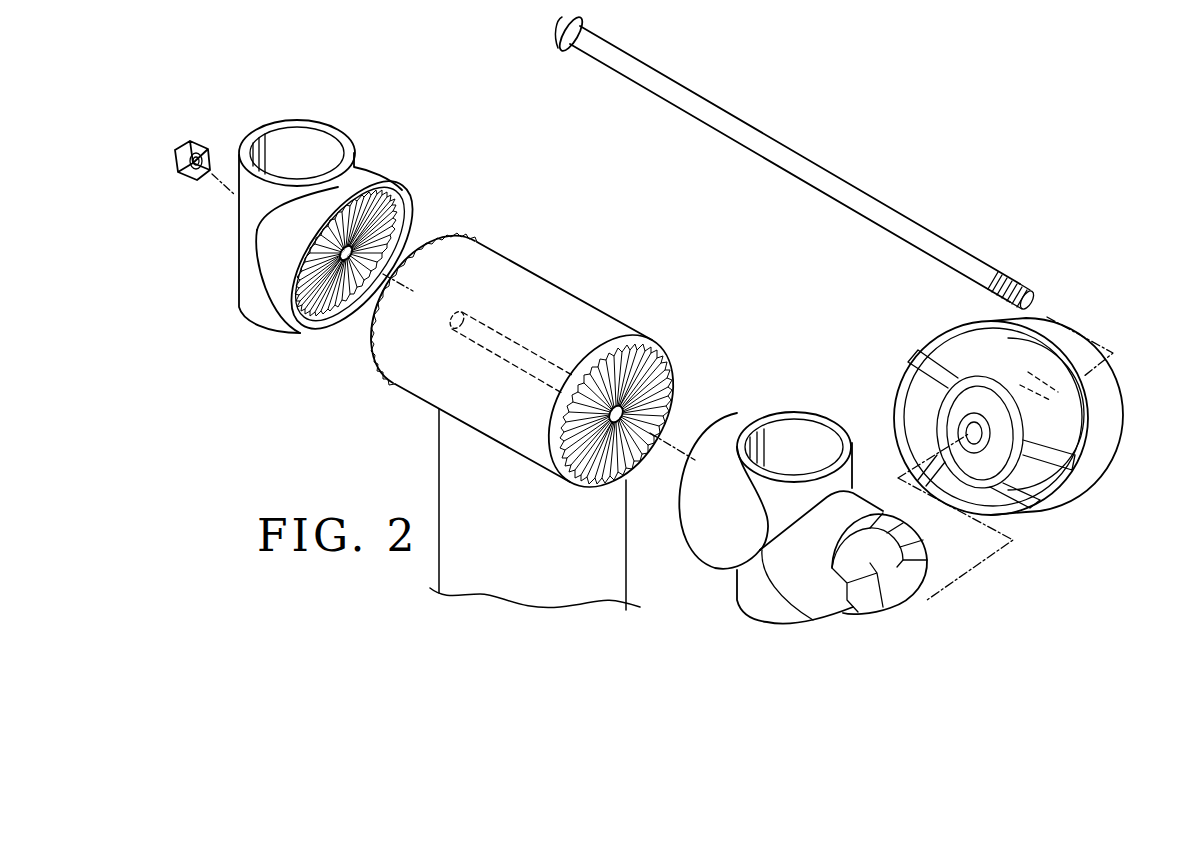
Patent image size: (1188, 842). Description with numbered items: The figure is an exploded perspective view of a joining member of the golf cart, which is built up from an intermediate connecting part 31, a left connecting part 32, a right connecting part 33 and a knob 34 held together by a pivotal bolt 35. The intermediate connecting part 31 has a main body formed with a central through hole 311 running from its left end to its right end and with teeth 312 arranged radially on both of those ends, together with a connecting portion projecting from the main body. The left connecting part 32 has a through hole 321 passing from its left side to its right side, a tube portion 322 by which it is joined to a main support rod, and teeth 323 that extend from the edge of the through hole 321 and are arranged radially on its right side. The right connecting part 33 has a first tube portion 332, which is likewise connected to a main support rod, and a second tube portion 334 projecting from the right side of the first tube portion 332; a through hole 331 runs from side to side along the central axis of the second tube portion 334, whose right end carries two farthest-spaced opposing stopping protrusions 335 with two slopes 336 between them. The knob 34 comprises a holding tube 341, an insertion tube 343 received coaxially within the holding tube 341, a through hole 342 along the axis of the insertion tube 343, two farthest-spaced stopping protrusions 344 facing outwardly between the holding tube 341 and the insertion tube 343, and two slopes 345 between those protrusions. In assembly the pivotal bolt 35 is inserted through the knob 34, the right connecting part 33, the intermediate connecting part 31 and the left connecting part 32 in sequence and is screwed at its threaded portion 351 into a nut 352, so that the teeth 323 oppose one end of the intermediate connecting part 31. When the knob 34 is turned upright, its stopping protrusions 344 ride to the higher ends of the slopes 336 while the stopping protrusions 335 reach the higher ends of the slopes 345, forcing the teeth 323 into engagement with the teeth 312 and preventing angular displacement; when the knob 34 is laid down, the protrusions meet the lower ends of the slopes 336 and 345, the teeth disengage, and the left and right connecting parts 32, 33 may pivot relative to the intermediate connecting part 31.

The intermediate connecting part 31 is at (535, 393).
The central through hole 311 is at (533, 353).
The teeth 312 is at (450, 244).
The left connecting part 32 is at (347, 223).
The through hole 321 is at (327, 318).
The tube portion 322 is at (293, 137).
The teeth 323 is at (385, 220).
The right connecting part 33 is at (846, 504).
The through hole 331 is at (927, 598).
The first tube portion 332 is at (805, 438).
The second tube portion 334 is at (790, 567).
The stopping protrusions 335 is at (917, 560).
The slopes 336 is at (872, 527).
The knob 34 is at (1031, 438).
The holding tube 341 is at (1067, 500).
The through hole 342 is at (1003, 500).
The insertion tube 343 is at (968, 418).
The stopping protrusions 344 is at (990, 433).
The slopes 345 is at (1077, 503).
The pivotal bolt 35 is at (834, 195).
The threaded portion 351 is at (1020, 280).
The nut 352 is at (196, 137).